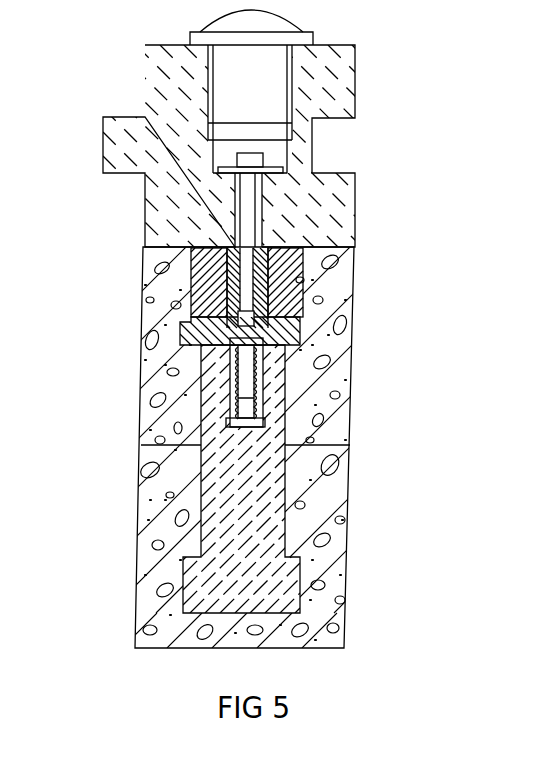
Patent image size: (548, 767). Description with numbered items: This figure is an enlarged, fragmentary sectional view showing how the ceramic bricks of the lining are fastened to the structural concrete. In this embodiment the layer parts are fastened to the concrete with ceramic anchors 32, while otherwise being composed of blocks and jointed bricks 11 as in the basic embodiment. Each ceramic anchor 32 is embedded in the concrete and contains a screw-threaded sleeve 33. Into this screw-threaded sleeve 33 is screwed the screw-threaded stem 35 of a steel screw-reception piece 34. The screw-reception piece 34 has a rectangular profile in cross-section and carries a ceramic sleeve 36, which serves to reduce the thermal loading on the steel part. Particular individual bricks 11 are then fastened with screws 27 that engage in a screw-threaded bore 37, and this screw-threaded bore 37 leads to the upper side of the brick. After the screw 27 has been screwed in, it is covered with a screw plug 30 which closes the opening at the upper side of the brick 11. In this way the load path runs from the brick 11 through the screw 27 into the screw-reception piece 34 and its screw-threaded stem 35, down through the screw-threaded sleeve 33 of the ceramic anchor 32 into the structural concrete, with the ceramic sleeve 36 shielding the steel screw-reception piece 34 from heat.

The jointed brick 11 is at (333, 101).
The screw plug 30 is at (225, 92).
The screw 27 is at (248, 218).
The ceramic sleeve 36 is at (205, 285).
The screw-threaded bore 37 is at (272, 287).
The screw-reception piece 34 is at (205, 332).
The screw-threaded stem 35 is at (245, 385).
The screw-threaded sleeve 33 is at (263, 390).
The ceramic anchor 32 is at (225, 510).